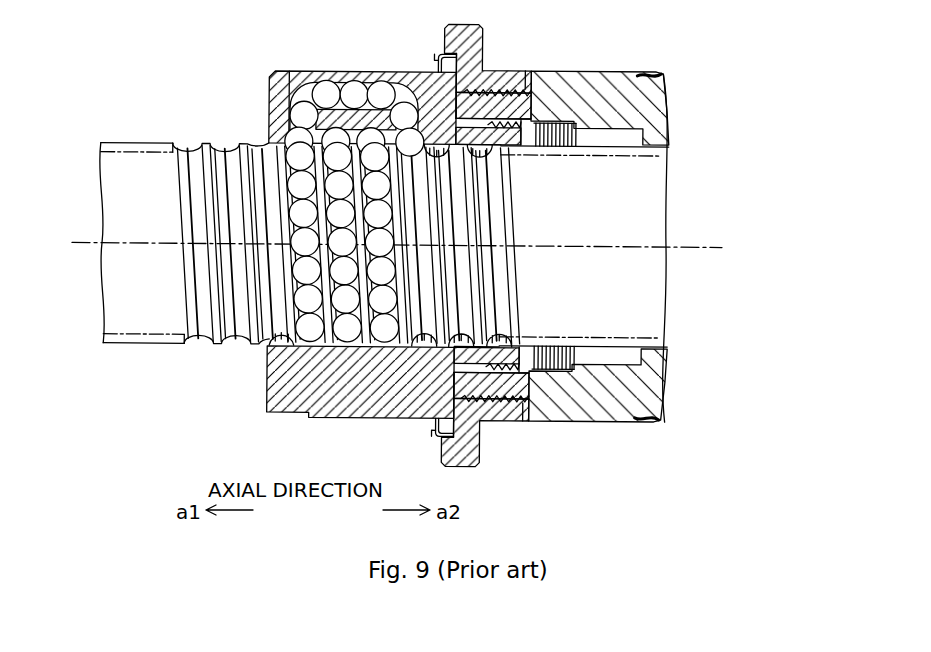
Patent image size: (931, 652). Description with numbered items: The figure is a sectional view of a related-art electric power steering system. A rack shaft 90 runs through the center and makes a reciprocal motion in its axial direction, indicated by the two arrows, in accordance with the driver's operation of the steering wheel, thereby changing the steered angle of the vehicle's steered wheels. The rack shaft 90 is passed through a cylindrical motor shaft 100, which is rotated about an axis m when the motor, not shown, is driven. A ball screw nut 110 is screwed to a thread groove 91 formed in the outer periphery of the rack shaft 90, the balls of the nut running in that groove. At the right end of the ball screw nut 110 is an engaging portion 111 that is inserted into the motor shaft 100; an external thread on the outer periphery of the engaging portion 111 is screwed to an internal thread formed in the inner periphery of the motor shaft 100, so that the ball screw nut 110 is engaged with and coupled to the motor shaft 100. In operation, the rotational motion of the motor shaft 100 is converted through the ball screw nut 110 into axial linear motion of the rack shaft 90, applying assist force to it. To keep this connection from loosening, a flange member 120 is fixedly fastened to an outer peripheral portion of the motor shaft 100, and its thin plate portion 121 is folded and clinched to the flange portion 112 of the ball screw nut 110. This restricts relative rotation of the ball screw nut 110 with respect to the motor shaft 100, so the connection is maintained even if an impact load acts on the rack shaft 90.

The rack shaft 90 is at (112, 144).
The thread groove 91 is at (256, 146).
The motor shaft 100 is at (576, 70).
The ball screw nut 110 is at (306, 71).
The engaging portion 111 is at (505, 142).
The flange portion 112 is at (434, 60).
The flange member 120 is at (482, 38).
The thin plate portion 121 is at (436, 53).
The axis m is at (718, 243).